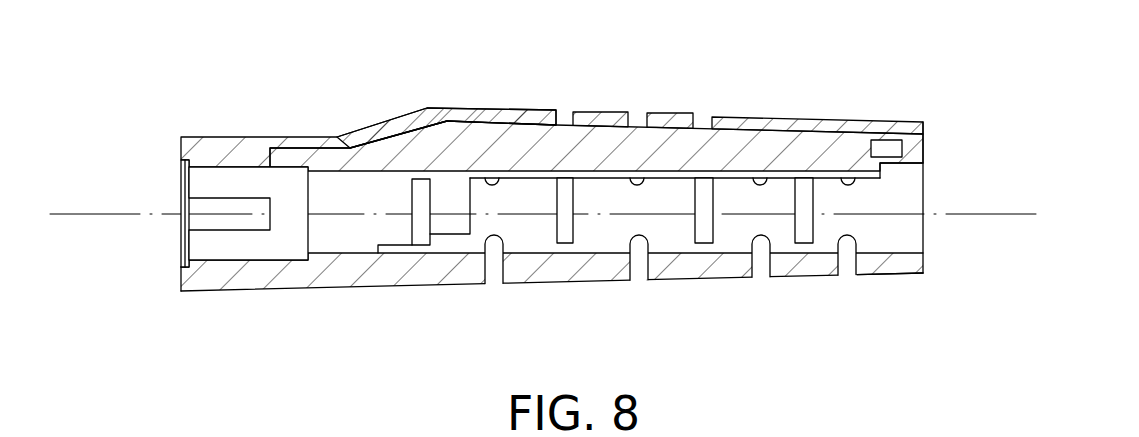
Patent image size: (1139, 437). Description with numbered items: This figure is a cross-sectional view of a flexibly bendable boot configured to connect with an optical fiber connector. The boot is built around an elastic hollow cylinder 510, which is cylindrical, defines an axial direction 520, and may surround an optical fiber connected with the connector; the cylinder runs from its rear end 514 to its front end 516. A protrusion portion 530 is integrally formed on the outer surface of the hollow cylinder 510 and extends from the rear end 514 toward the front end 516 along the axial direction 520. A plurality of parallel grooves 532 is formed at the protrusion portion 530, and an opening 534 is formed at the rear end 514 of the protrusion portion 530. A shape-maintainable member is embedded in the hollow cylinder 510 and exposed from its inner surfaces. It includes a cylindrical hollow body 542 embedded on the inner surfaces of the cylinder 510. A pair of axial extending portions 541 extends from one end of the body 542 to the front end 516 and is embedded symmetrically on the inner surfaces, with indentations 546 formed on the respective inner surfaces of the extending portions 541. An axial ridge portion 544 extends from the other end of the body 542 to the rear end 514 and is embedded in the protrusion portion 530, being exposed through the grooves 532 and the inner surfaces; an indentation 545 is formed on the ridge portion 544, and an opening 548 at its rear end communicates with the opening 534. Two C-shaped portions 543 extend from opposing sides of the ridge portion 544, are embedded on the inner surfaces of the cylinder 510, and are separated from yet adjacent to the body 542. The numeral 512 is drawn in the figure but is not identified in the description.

The hollow cylinder 510 is at (673, 225).
The open end of housing bore 512 is at (913, 193).
The rear end 514 is at (925, 262).
The front end 516 is at (182, 152).
The axial direction 520 is at (1032, 213).
The protrusion portion 530 is at (518, 115).
The grooves 532 is at (562, 117).
The opening 534 is at (923, 137).
The axial extending portions 541 is at (233, 222).
The hollow body 542 is at (345, 197).
The C-shaped portions 543 is at (447, 223).
The ridge portion 544 is at (682, 162).
The indentation 545 is at (893, 157).
The indentations 546 is at (183, 220).
The opening 548 is at (880, 148).